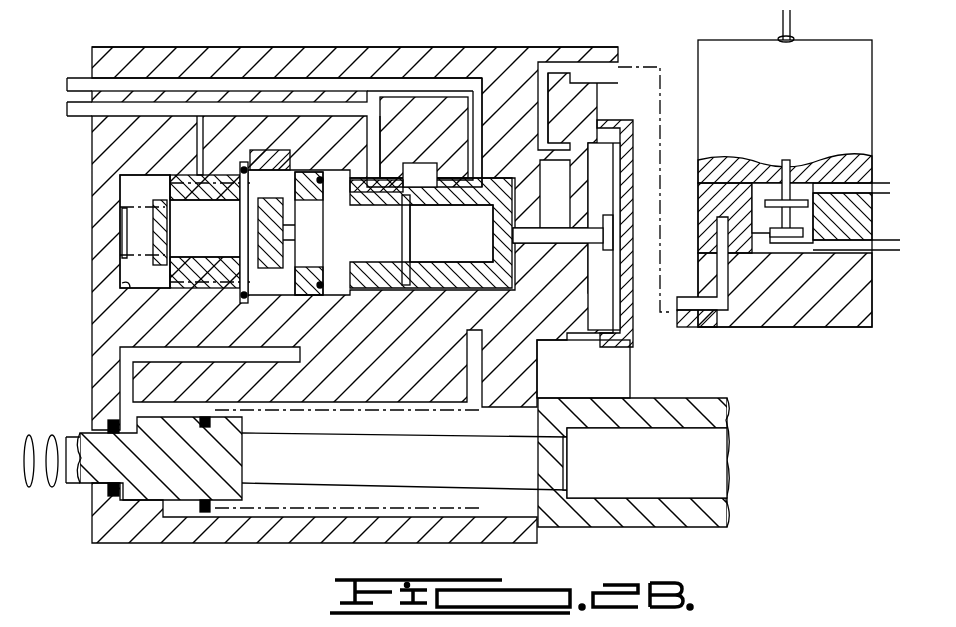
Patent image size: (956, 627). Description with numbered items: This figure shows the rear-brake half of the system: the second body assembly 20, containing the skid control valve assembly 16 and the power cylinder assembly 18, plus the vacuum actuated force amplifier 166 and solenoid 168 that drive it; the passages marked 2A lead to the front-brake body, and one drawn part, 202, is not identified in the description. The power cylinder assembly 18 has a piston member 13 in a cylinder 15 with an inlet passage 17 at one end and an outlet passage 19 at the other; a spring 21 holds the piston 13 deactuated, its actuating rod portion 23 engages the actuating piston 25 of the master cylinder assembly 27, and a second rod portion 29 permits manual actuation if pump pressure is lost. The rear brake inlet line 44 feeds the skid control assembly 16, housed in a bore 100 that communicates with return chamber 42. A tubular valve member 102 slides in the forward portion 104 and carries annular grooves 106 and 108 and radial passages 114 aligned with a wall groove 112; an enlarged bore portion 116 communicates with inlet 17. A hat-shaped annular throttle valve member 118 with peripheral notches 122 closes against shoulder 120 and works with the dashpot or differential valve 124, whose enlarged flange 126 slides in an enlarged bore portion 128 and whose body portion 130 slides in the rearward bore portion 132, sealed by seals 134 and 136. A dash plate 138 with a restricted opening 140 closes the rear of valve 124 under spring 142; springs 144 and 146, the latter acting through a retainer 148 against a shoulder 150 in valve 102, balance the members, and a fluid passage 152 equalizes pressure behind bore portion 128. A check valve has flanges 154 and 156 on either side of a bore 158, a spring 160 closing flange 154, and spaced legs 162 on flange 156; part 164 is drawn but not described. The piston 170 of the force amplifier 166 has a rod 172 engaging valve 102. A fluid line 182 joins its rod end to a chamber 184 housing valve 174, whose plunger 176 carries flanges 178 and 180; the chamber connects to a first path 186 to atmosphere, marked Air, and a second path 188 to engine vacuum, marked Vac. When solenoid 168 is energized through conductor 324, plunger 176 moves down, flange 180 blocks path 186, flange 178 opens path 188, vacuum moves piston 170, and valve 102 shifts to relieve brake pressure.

The skid control valve assembly 16 is at (72, 212).
The return chamber 42 is at (92, 62).
The rear brake inlet line 44 is at (92, 135).
The to Fig. 2A is at (68, 116).
The second body assembly 20 is at (104, 560).
The piston member 13 is at (150, 505).
The actuating rod portion 23 is at (300, 490).
The cylinder 15 is at (240, 520).
The spring 21 is at (205, 520).
The second rod portion 29 is at (56, 488).
The rod extension 202 is at (42, 445).
The master cylinder assembly 27 is at (727, 402).
The actuating piston 25 is at (660, 437).
The piston 170 is at (583, 369).
The vacuum actuated force amplifier 166 is at (642, 147).
The rod 172 is at (566, 236).
The dash plate 138 is at (145, 231).
The restricted opening 140 is at (171, 232).
The spring 160 is at (205, 187).
The flange 156 is at (205, 272).
The body portion 130 is at (210, 232).
The fluid passage 152 is at (195, 152).
The spring 142 is at (123, 247).
The rearward bore portion 132 is at (127, 283).
The flange 154 is at (325, 238).
The spring 146 is at (345, 232).
The retainer 148 is at (327, 258).
The bore 100 is at (431, 233).
The radial passages 114 is at (451, 233).
The shoulder 150 is at (393, 165).
The enlarged bore portion 128 is at (253, 153).
The spring 144 is at (286, 145).
The annular throttle valve member 118 is at (326, 150).
The bore 158 is at (349, 167).
The seal 134 is at (165, 292).
The dashpot or differential valve 124 is at (141, 331).
The enlarged flange 126 is at (189, 336).
The plate 164 is at (243, 334).
The spaced legs 162 is at (293, 316).
The peripheral notches 122 is at (299, 343).
The shoulder 120 is at (349, 311).
The valve member 102 is at (356, 343).
The annular groove 112 is at (416, 324).
The annular fluid communicating groove 106 is at (383, 357).
The forward portion 104 is at (443, 357).
The annular fluid communicating groove 108 is at (516, 311).
The outlet passage 19 is at (470, 382).
The enlarged bore portion 116 is at (283, 383).
The seal 136 is at (181, 380).
The inlet passage 17 is at (92, 370).
The power cylinder assembly 18 is at (70, 420).
The solenoid 168 is at (854, 36).
The conductor 324 is at (778, 32).
The plunger 176 is at (790, 168).
The valve 174 is at (870, 168).
The air port Air is at (890, 177).
The vacuum port Vac is at (893, 231).
The flange 180 is at (728, 175).
The chamber 184 is at (722, 202).
The first path 186 is at (842, 216).
The flange 178 is at (776, 280).
The fluid line 182 is at (730, 312).
The second path 188 is at (829, 293).